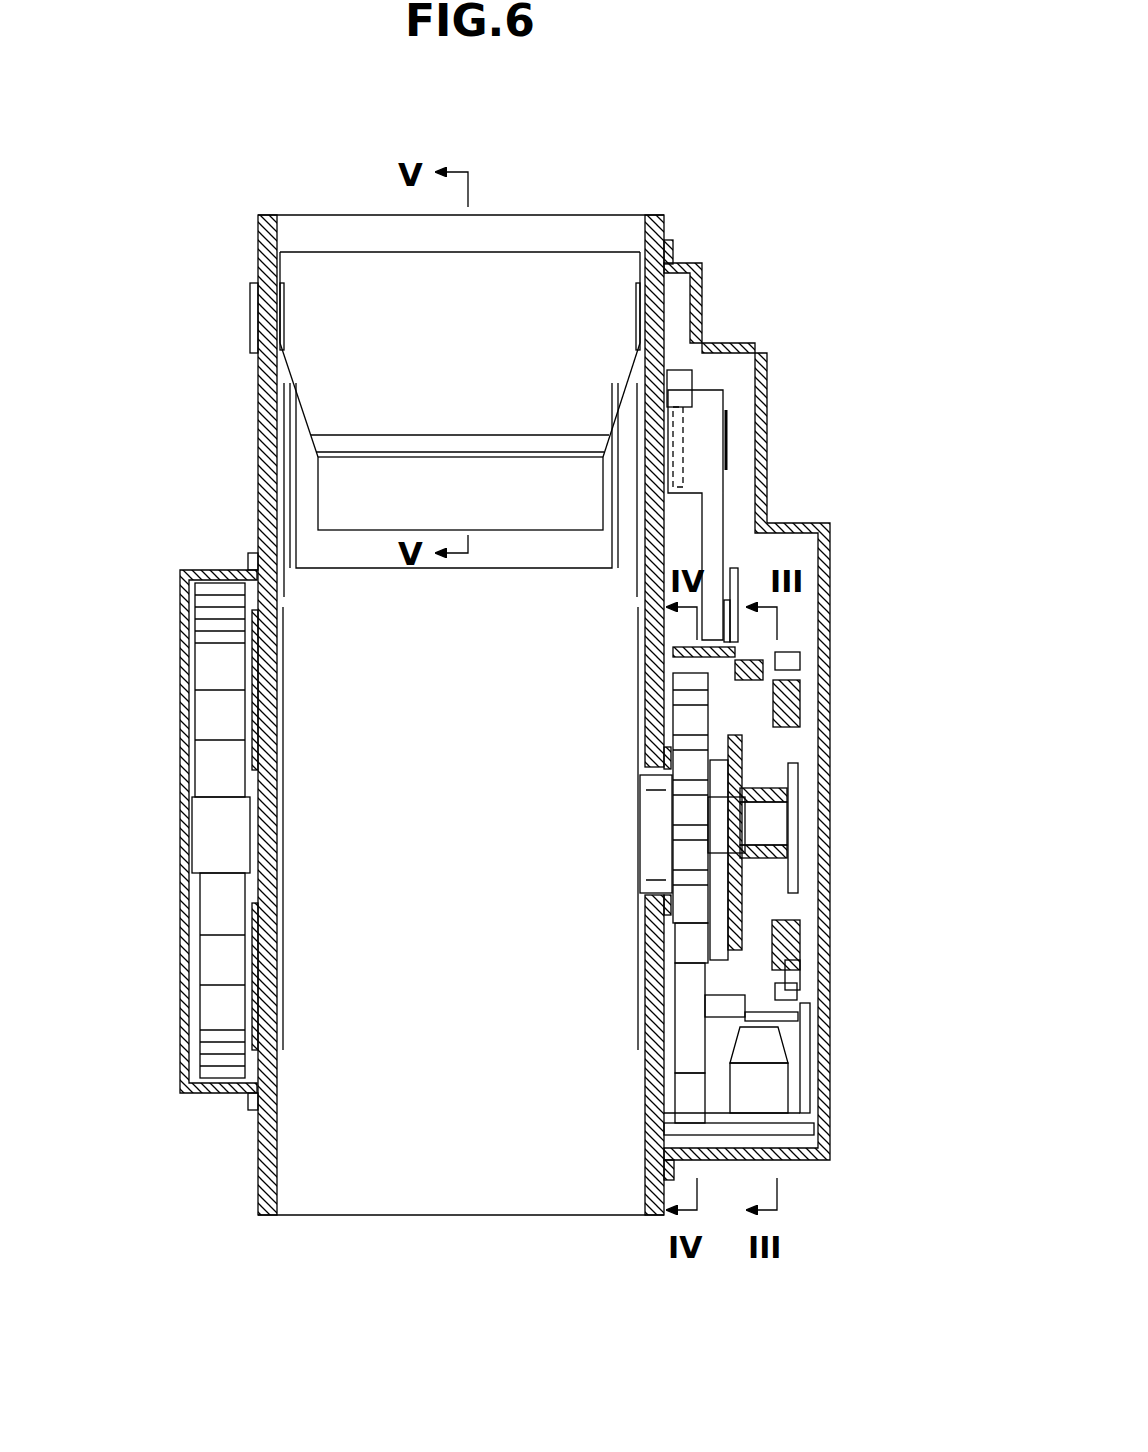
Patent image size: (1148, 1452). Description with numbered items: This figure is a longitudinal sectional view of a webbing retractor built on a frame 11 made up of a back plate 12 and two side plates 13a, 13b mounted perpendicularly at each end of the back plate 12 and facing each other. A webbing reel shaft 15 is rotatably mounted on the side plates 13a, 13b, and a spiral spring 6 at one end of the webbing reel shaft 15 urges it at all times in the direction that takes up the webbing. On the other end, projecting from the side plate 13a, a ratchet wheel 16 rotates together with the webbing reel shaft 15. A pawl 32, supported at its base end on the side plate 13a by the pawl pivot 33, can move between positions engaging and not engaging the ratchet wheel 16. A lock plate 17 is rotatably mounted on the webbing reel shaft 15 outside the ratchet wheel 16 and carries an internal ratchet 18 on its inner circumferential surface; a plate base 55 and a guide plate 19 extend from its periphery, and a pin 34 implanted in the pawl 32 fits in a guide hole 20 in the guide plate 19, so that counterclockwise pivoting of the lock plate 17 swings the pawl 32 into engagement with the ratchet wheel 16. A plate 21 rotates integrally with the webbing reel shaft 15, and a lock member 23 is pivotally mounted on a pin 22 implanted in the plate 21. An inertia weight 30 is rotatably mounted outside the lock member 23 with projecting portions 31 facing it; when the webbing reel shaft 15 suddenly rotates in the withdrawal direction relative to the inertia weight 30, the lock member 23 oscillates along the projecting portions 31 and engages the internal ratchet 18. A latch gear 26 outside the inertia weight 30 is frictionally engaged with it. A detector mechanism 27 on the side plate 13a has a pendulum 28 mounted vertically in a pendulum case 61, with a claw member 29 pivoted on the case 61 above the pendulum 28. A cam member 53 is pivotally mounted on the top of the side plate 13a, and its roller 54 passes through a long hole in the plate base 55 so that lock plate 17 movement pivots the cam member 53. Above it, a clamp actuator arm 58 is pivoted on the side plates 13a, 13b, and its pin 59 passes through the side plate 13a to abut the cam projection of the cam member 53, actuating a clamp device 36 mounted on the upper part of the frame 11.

The spiral spring 6 is at (222, 655).
The frame 11 is at (674, 207).
The back plate 12 is at (398, 1190).
The side plate 13a is at (665, 262).
The side plate 13b is at (262, 255).
The webbing reel shaft 15 is at (652, 830).
The ratchet wheel 16 is at (682, 708).
The lock plate 17 is at (684, 633).
The internal ratchet 18 is at (745, 670).
The guide plate 19 is at (745, 1017).
The guide hole 20 is at (702, 947).
The plate 21 is at (722, 775).
The pin 22 is at (760, 740).
The lock member 23 is at (760, 876).
The latch gear 26 is at (798, 662).
The detector mechanism 27 is at (834, 1066).
The pendulum 28 is at (780, 1048).
The claw member 29 is at (797, 972).
The inertia weight 30 is at (798, 778).
The projecting portions 31 is at (798, 705).
The pawl 32 is at (680, 1100).
The pawl pivot 33 is at (680, 1068).
The pin 34 is at (722, 1005).
The clamp device 36 is at (358, 575).
The cam member 53 is at (716, 474).
The roller 54 is at (740, 582).
The plate base 55 is at (736, 568).
The clamp actuator arm 58 is at (620, 313).
The pin 59 is at (680, 378).
The pendulum case 61 is at (805, 1110).